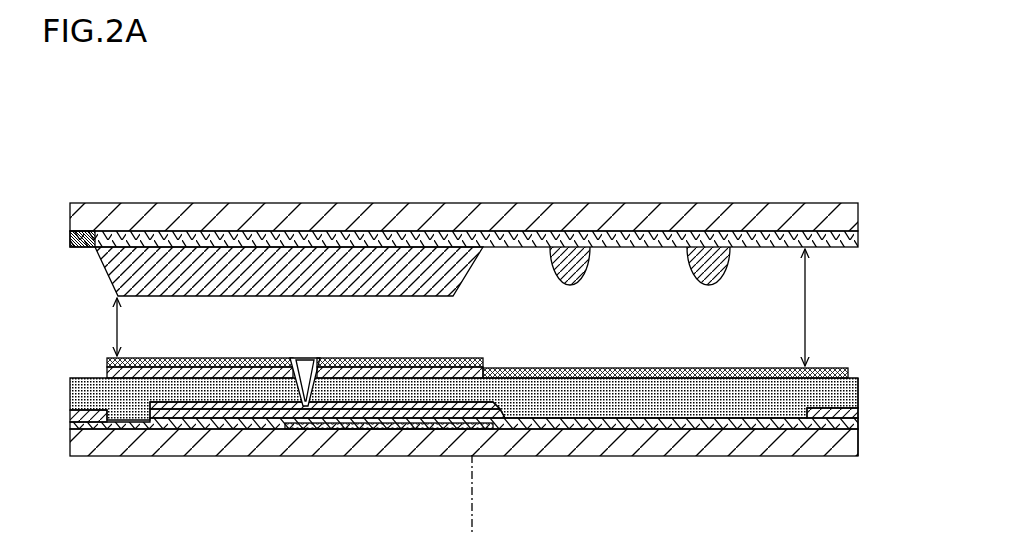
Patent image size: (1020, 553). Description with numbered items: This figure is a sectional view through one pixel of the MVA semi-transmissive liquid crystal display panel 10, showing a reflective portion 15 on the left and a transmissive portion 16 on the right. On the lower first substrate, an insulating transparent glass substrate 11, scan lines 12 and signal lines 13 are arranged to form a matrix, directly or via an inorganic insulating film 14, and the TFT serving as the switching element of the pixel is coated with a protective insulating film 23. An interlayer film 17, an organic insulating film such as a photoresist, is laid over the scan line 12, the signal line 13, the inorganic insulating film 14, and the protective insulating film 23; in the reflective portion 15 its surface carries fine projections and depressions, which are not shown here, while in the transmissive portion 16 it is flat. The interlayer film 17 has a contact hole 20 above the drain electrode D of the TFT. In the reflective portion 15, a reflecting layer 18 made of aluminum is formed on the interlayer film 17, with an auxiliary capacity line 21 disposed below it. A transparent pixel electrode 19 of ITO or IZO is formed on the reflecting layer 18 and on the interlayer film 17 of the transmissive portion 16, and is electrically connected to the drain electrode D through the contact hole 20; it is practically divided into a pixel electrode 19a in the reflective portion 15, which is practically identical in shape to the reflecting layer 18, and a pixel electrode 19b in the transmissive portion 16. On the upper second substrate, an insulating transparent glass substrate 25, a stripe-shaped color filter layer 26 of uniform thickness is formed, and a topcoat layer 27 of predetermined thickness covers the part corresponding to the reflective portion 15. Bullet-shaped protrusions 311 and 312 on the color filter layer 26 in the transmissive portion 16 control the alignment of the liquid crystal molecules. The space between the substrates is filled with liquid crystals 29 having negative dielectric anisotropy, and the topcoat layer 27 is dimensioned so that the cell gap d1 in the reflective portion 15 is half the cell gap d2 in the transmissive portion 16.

The MVA semi-transmissive liquid crystal display panel 10 is at (96, 139).
The insulating transparent glass substrate 25 is at (216, 218).
The color filter layer 26 is at (622, 247).
The topcoat layer 27 is at (403, 275).
The protrusion 311 is at (572, 270).
The protrusion 312 is at (717, 270).
The liquid crystals 29 is at (682, 331).
The insulating transparent glass substrate 11 is at (196, 440).
The scan line 12 is at (833, 430).
The signal line 13 is at (78, 424).
The inorganic insulating film 14 is at (598, 426).
The reflective portion 15 is at (470, 519).
The transmissive portion 16 is at (474, 519).
The interlayer film 17 is at (88, 395).
The reflecting layer 18 is at (363, 358).
The pixel electrode 19 is at (557, 314).
The pixel electrode 19a is at (420, 358).
The pixel electrode 19b is at (538, 368).
The contact hole 20 is at (306, 408).
The auxiliary capacity line 21 is at (372, 432).
The protective insulating film 23 is at (540, 428).
The drain electrode D is at (298, 408).
The cell gap d1 is at (97, 327).
The cell gap d2 is at (821, 307).